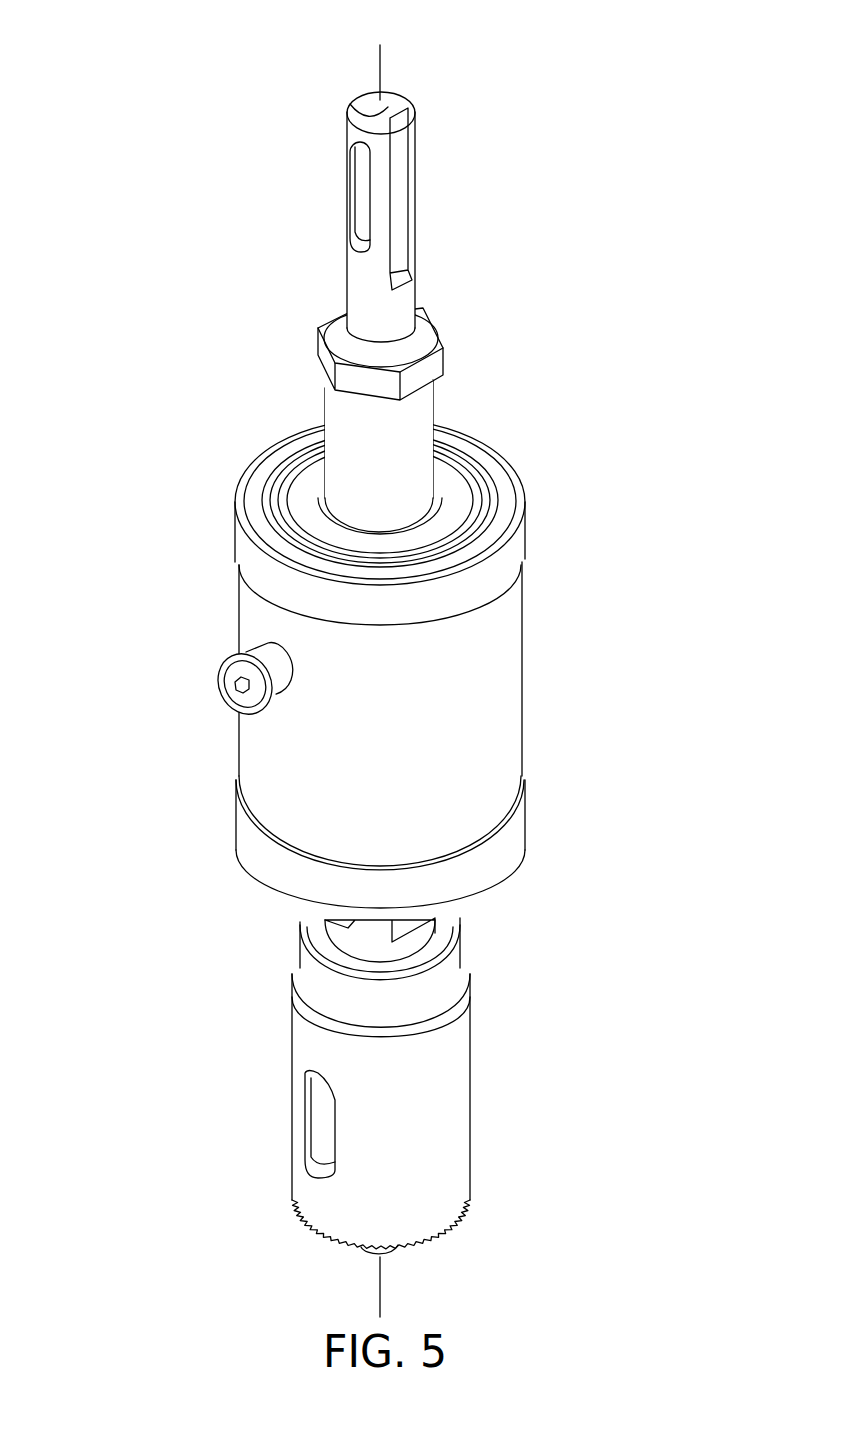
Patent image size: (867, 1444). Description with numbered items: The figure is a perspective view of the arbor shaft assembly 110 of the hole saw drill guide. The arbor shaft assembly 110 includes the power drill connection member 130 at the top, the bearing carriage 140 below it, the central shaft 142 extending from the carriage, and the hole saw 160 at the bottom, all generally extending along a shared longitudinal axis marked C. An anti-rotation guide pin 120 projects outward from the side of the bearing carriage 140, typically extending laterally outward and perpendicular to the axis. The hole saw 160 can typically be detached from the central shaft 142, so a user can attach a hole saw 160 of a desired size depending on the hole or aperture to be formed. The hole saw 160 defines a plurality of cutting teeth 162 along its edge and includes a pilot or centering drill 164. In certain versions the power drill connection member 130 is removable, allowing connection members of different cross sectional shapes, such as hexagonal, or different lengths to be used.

The arbor shaft assembly 110 is at (93, 211).
The anti-rotation guide pin 120 is at (228, 664).
The power drill connection member 130 is at (413, 184).
The bearing carriage 140 is at (517, 668).
The central shaft 142 is at (423, 937).
The hole saw 160 is at (452, 1097).
The cutting teeth 162 is at (445, 1233).
The pilot or centering drill 164 is at (370, 1257).